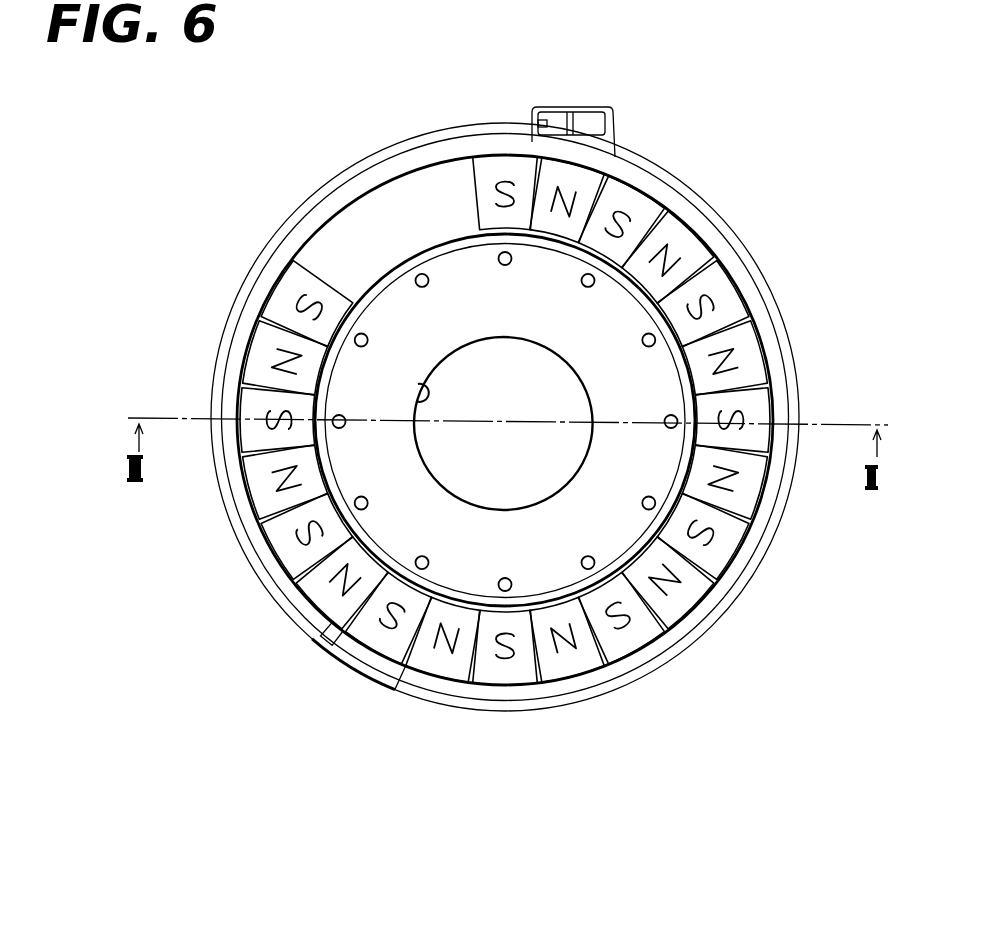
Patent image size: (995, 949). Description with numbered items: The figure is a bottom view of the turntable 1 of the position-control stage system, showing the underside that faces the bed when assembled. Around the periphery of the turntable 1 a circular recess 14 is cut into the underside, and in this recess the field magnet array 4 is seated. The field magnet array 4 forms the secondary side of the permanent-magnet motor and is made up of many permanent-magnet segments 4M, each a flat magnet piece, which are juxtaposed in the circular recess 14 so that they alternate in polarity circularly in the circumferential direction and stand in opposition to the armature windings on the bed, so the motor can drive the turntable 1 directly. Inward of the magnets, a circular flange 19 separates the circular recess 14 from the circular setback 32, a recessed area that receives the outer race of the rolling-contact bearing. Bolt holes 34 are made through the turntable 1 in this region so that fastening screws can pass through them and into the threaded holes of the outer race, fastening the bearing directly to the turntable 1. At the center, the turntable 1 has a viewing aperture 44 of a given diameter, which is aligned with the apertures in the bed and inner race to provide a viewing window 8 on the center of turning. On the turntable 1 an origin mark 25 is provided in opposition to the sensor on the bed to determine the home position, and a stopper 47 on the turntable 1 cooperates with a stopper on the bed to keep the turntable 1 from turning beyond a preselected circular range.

The turntable 1 is at (446, 172).
The field magnet array 4 is at (695, 255).
The permanent-magnet segments 4M is at (748, 350).
The viewing window 8 is at (452, 495).
The circular recess 14 is at (340, 232).
The circular flange 19 is at (406, 262).
The origin mark 25 is at (588, 122).
The circular setback 32 is at (362, 372).
The bolt holes 34 is at (593, 275).
The viewing aperture 44 is at (418, 387).
The stopper 47 is at (343, 647).